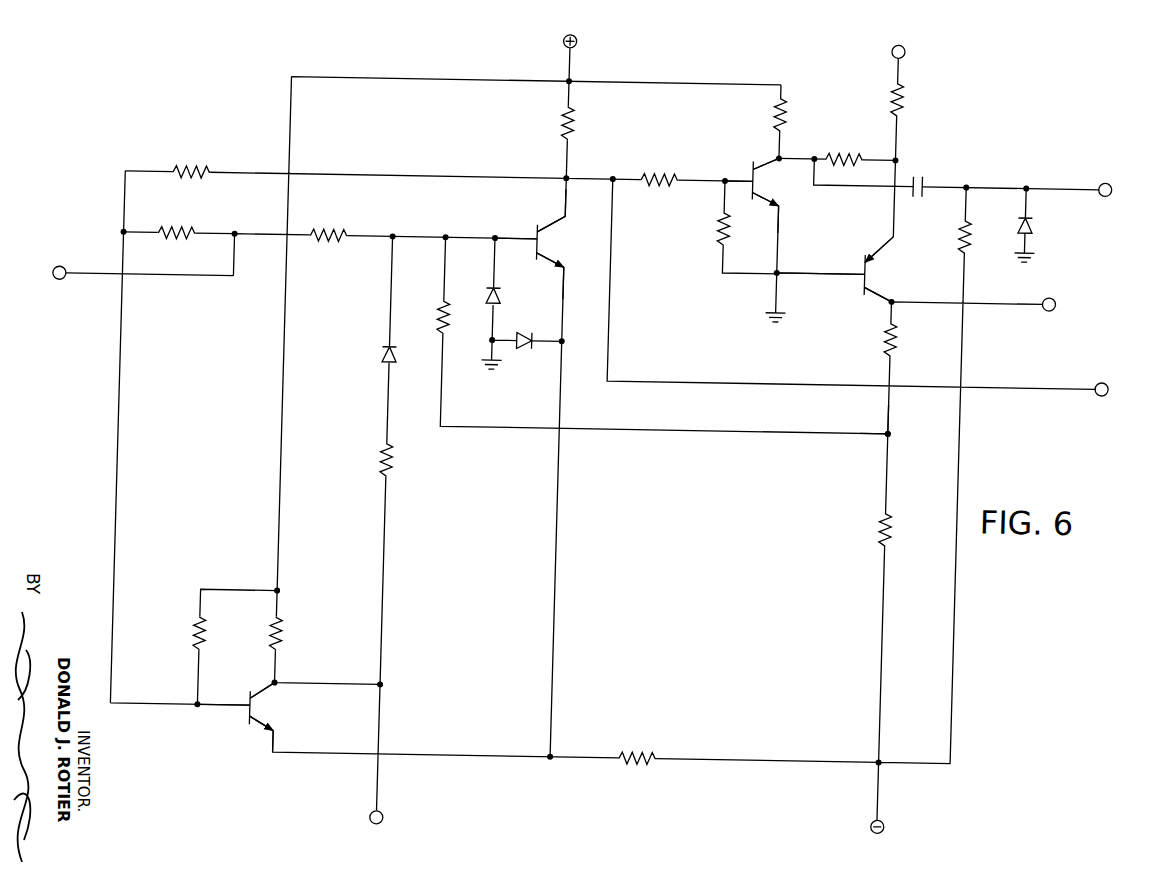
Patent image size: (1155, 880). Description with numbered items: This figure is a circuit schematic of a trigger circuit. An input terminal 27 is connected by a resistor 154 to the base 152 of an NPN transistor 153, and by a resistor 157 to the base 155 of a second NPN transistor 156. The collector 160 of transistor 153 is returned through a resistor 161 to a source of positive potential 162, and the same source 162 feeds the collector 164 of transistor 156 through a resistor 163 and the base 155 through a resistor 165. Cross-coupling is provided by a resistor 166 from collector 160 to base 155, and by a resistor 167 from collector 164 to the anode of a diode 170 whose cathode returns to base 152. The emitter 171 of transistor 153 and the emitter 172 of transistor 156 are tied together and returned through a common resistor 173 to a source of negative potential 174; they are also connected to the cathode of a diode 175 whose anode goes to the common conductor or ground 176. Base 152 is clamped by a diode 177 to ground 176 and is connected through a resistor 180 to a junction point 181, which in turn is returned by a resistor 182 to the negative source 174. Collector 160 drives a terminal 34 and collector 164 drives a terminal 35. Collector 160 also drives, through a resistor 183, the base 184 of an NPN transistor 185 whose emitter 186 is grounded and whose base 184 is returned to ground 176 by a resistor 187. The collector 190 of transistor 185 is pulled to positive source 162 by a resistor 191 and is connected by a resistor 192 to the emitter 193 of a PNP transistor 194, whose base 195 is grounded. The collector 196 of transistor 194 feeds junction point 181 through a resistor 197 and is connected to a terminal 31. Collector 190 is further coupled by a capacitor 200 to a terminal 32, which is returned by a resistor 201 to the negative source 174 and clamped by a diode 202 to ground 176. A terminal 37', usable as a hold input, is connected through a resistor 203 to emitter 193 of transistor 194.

The terminal 27 is at (52, 277).
The terminal 31 is at (1049, 294).
The terminal 32 is at (1101, 177).
The terminal 34 is at (1104, 378).
The terminal 35 is at (394, 818).
The terminal 37' is at (922, 47).
The base 152 is at (524, 237).
The NPN transistor 153 is at (558, 223).
The resistor 154 is at (319, 239).
The base 155 is at (252, 713).
The NPN transistor 156 is at (268, 706).
The resistor 157 is at (169, 237).
The collector 160 is at (552, 218).
The resistor 161 is at (565, 119).
The source of positive potential 162 is at (566, 40).
The resistor 163 is at (287, 633).
The collector 164 is at (277, 695).
The resistor 165 is at (200, 635).
The resistor 166 is at (182, 175).
The resistor 167 is at (385, 469).
The diode 170 is at (382, 356).
The emitter 171 is at (548, 269).
The emitter 172 is at (264, 736).
The resistor 173 is at (646, 754).
The source of negative potential 174 is at (895, 818).
The diode 175 is at (519, 334).
The ground 176 is at (1028, 248).
The diode 177 is at (484, 302).
The resistor 180 is at (436, 317).
The junction point 181 is at (892, 429).
The resistor 182 is at (894, 523).
The resistor 183 is at (647, 175).
The base 184 is at (741, 176).
The NPN transistor 185 is at (774, 182).
The emitter 186 is at (763, 203).
The resistor 187 is at (714, 223).
The collector 190 is at (757, 157).
The resistor 191 is at (778, 112).
The resistor 192 is at (832, 153).
The emitter 193 is at (879, 245).
The PNP transistor 194 is at (885, 269).
The base 195 is at (845, 269).
The collector 196 is at (876, 295).
The resistor 197 is at (894, 330).
The capacitor 200 is at (918, 175).
The resistor 201 is at (952, 226).
The diode 202 is at (1029, 213).
The resistor 203 is at (893, 90).